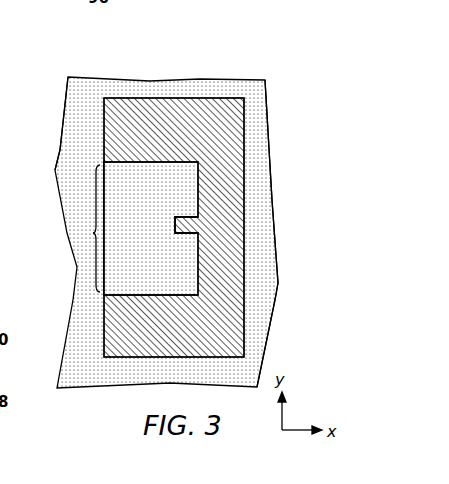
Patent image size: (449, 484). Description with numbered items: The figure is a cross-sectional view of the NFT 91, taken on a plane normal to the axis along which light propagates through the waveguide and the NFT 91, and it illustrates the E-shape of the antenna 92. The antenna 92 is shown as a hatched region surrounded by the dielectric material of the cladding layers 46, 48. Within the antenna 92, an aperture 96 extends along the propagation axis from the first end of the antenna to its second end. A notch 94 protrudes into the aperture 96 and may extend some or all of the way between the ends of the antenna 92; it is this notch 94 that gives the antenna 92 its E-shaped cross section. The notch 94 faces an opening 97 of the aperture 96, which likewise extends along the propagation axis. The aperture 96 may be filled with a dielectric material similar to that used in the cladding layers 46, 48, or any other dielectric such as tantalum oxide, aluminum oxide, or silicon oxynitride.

The cladding layer 46 is at (83, 148).
The cladding layer 48 is at (265, 258).
The NFT 91 is at (77, 108).
The antenna 92 is at (187, 108).
The notch 94 is at (188, 220).
The aperture 96 is at (156, 239).
The opening 97 is at (84, 228).